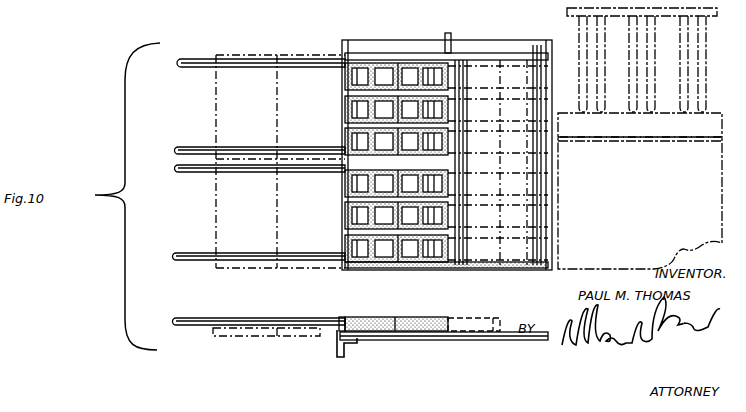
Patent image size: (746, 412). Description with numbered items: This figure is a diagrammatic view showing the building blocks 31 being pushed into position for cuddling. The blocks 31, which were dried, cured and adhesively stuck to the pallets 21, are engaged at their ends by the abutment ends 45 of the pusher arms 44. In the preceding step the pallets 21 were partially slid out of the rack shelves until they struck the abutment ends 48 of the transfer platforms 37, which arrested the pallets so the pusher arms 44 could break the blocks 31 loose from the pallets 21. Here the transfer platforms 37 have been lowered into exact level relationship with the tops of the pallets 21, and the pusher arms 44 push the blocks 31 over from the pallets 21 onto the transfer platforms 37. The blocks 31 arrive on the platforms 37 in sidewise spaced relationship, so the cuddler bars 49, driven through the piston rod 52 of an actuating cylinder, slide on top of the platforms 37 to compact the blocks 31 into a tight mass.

The pallet 21 is at (299, 48).
The building block 31 is at (420, 150).
The transfer platform 37 is at (501, 43).
The pusher arm 44 is at (208, 68).
The abutment end 45 is at (345, 106).
The abutment end of platform 48 is at (340, 355).
The cuddler bar 49 is at (383, 52).
The piston rod 52 is at (449, 54).